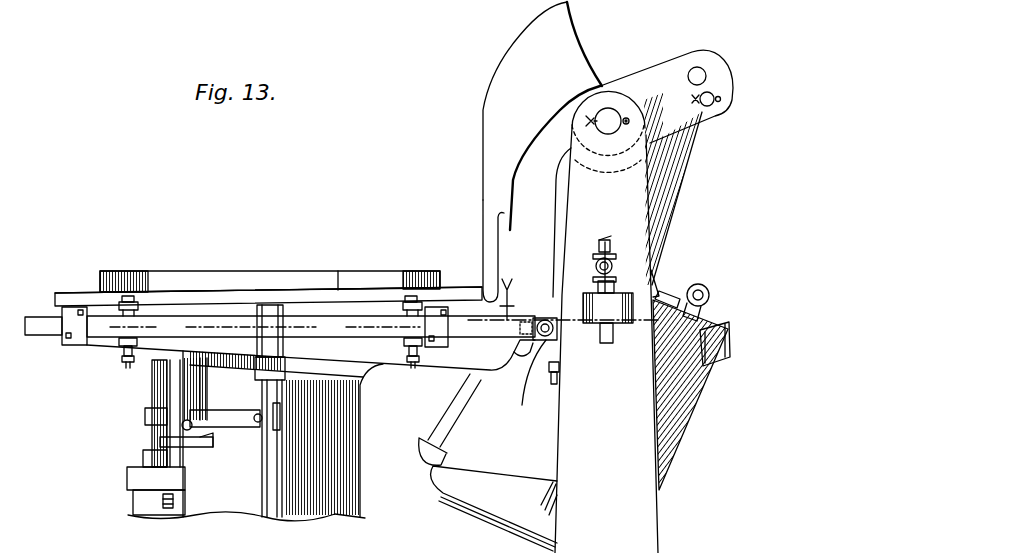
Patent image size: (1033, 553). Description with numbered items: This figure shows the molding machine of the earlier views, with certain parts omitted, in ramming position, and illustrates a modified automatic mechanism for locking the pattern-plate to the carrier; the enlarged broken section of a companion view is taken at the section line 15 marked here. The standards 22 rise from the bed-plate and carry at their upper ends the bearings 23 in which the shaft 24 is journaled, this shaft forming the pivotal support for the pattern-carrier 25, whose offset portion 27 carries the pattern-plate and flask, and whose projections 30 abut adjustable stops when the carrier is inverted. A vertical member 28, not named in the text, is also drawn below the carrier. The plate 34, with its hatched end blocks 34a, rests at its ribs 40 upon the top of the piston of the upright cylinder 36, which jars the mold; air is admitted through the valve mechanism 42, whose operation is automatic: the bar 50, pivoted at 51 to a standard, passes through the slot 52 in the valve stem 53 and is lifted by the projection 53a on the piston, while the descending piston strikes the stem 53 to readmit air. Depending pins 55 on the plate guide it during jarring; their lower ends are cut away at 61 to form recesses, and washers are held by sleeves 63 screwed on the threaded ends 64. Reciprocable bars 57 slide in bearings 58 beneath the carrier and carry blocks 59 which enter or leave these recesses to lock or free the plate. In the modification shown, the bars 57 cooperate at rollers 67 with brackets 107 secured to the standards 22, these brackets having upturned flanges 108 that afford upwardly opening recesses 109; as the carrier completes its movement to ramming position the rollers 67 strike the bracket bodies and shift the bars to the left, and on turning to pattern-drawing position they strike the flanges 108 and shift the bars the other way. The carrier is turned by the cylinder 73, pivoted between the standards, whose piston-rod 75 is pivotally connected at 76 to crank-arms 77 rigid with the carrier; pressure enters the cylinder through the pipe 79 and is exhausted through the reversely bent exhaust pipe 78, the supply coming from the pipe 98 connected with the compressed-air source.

The section line 15 is at (501, 301).
The standards 22 is at (607, 322).
The bearings 23 is at (636, 150).
The shaft 24 is at (609, 128).
The pattern-carrier 25 is at (220, 300).
The portion of the pattern-carrier 27 is at (73, 292).
The vertical rod 28 is at (297, 443).
The projections 30 is at (578, 33).
The plate 34 is at (277, 284).
The hatched end blocks of guide bar 34a is at (428, 233).
The cylinder 36 is at (332, 496).
The ribs 40 is at (438, 297).
The valve mechanism 42 is at (130, 491).
The bar 50 is at (228, 422).
The pivot 51 is at (190, 442).
The slot 52 is at (157, 421).
The valve stem 53 is at (152, 437).
The projection 53a is at (197, 448).
The depending pins 55 is at (138, 300).
The reciprocable bars 57 is at (45, 330).
The bearings 58 is at (75, 346).
The blocks 59 is at (311, 341).
The cut-away portions 61 is at (145, 305).
The sleeves 63 is at (119, 347).
The threaded ends 64 is at (128, 358).
The rollers 67 is at (537, 381).
The cylinder 73 is at (660, 430).
The piston-rod 75 is at (660, 228).
The pivotal connection 76 is at (710, 105).
The crank-arms 77 is at (717, 82).
The exhaust pipe 78 is at (437, 424).
The pipe 79 is at (705, 285).
The pipe 98 is at (612, 266).
The brackets 107 is at (553, 350).
The upturned flanges 108 is at (500, 362).
The recesses 109 is at (550, 342).